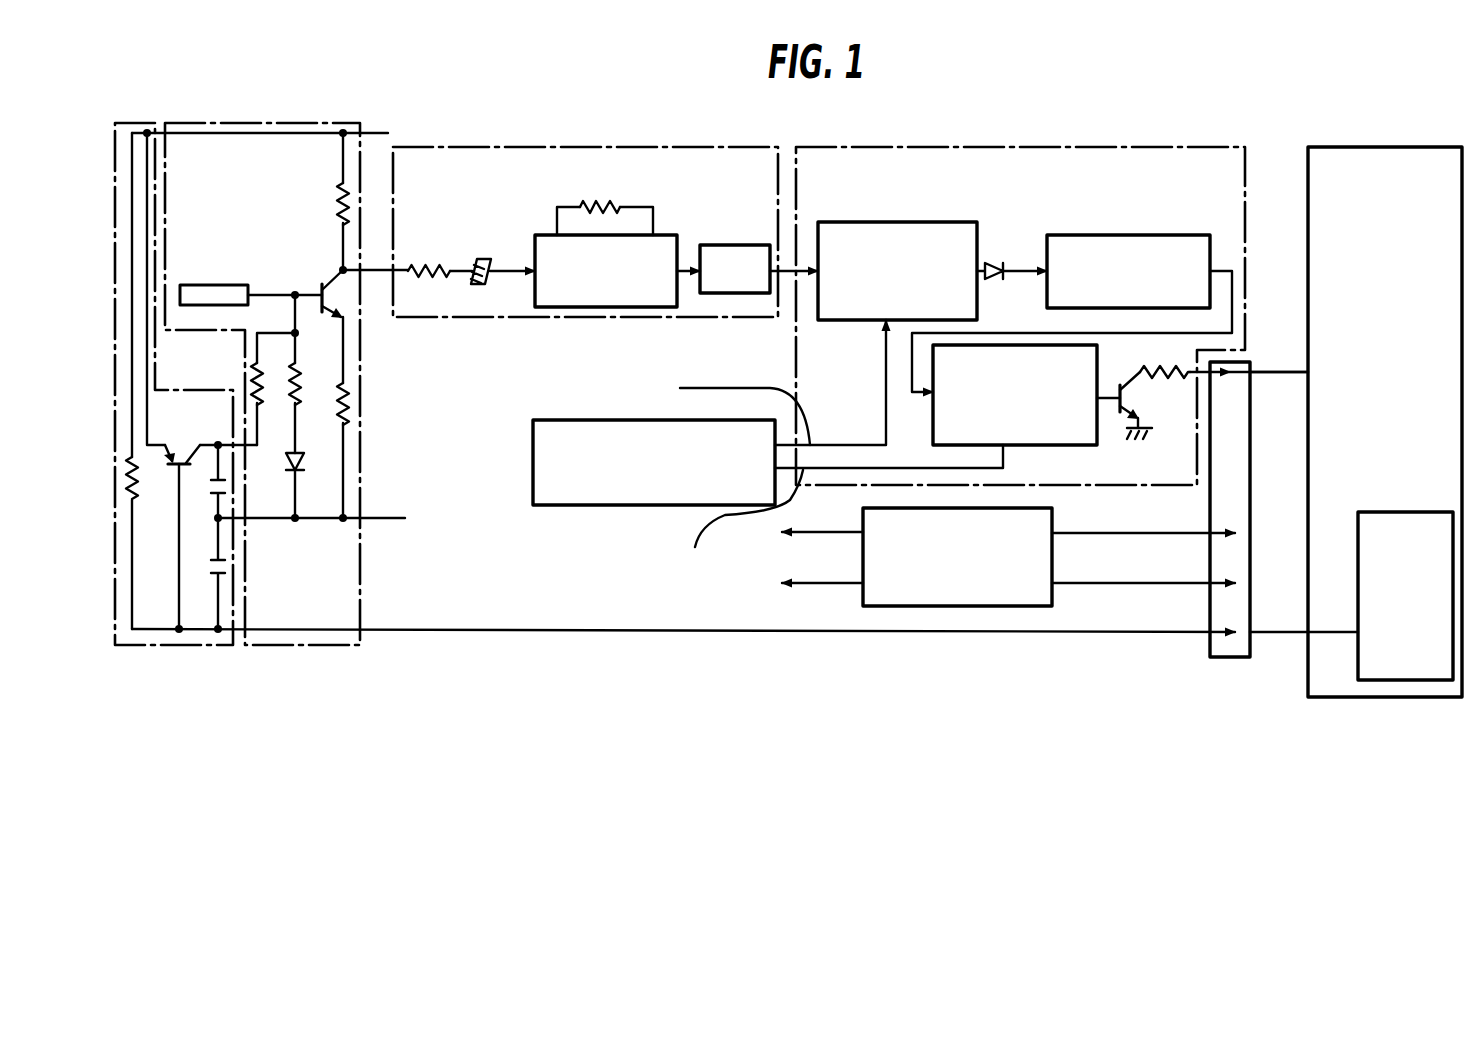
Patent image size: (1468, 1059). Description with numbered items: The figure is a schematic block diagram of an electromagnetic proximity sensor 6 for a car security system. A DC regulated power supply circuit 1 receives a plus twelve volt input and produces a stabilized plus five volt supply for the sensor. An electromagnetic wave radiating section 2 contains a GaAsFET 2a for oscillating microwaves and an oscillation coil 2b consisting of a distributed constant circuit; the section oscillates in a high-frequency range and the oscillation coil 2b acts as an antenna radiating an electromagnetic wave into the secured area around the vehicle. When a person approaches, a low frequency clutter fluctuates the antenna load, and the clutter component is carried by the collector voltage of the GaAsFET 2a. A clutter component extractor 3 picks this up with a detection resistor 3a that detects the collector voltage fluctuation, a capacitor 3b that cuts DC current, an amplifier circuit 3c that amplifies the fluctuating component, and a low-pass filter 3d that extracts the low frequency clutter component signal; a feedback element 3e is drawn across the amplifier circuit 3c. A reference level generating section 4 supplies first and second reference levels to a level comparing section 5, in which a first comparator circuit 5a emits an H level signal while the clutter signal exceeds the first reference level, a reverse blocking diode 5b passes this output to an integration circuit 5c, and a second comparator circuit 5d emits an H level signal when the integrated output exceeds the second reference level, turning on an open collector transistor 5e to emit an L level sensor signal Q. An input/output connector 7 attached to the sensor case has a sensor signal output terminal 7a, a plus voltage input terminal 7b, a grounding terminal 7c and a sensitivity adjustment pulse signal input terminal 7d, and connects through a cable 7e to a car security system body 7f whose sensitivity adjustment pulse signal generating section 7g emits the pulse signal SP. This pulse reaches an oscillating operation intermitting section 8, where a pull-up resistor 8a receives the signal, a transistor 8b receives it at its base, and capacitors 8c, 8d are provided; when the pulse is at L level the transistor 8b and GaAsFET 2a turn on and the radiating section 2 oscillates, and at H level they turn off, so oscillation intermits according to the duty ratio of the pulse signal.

The DC regulated power supply circuit 1 is at (1025, 508).
The electromagnetic wave radiating section 2 is at (386, 439).
The GaAsFET 2a is at (331, 283).
The oscillation coil 2b is at (222, 286).
The clutter component extractor 3 is at (581, 211).
The detection resistor 3a is at (441, 262).
The capacitor 3b is at (483, 258).
The amplifier circuit 3c is at (658, 235).
The low-pass filter 3d is at (748, 245).
The feedback resistor 3e is at (600, 207).
The reference level generating section 4 is at (533, 446).
The level comparing section 5 is at (1020, 296).
The first comparator circuit 5a is at (893, 222).
The reverse blocking diode 5b is at (1001, 263).
The integration circuit 5c is at (1176, 235).
The second comparator circuit 5d is at (1098, 420).
The open collector transistor 5e is at (1164, 366).
The electromagnetic proximity sensor 6 is at (683, 434).
The input/output connector 7 is at (1205, 533).
The sensor signal output terminal 7a is at (1228, 380).
The +voltage input terminal 7b is at (1223, 528).
The grounding terminal 7c is at (1223, 578).
The sensitivity adjustment pulse signal input terminal 7d is at (1223, 628).
The cable 7e is at (1305, 372).
The car security system body 7f is at (1357, 485).
The sensitivity adjustment pulse signal generating section 7g is at (1405, 512).
The oscillating operation intermitting section 8 is at (203, 458).
The pull-up resistor 8a is at (136, 477).
The transistor 8b is at (183, 452).
The capacitor 8c is at (214, 487).
The capacitor 8d is at (215, 566).